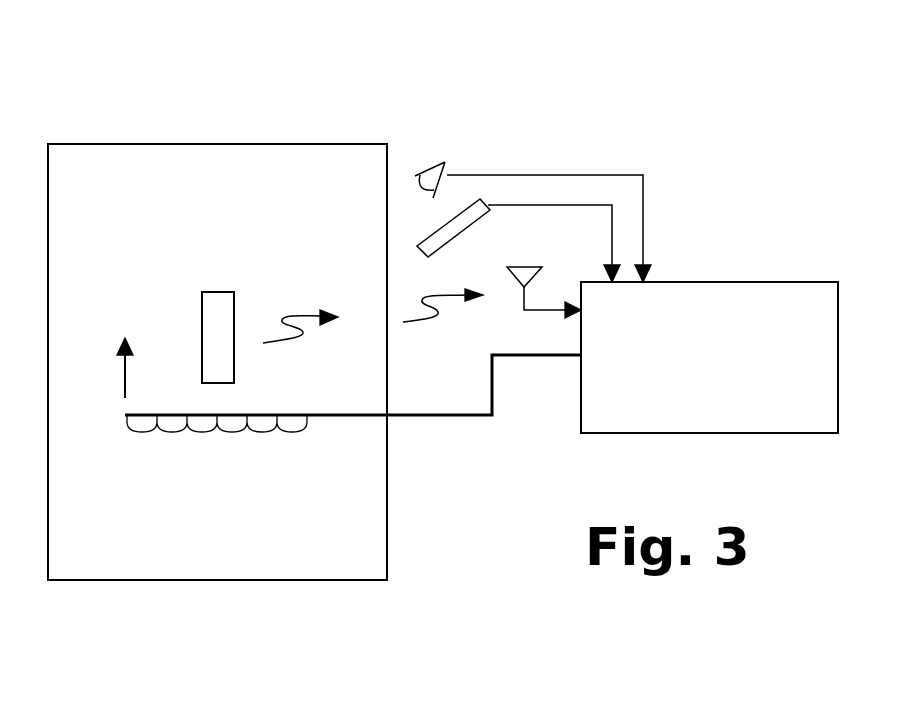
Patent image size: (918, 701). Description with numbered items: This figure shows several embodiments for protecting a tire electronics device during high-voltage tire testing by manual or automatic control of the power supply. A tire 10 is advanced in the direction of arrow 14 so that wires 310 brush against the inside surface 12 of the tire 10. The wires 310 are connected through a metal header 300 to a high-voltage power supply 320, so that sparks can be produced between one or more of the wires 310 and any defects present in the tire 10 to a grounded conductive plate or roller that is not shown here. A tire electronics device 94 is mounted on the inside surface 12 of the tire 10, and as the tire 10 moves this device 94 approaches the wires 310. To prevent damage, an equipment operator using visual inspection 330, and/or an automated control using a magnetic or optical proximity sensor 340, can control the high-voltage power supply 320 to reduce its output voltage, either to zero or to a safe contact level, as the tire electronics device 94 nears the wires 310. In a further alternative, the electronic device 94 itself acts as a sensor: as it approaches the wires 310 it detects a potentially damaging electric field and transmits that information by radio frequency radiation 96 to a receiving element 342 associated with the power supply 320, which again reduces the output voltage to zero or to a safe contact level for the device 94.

The tire 10 is at (267, 145).
The inside surface 12 is at (135, 170).
The arrow 14 is at (125, 373).
The tire electronics device 94 is at (202, 293).
The radio frequency radiation 96 is at (312, 318).
The metal header 300 is at (453, 418).
The wires 310 is at (177, 432).
The high-voltage power supply 320 is at (709, 357).
The visual inspection 330 is at (430, 167).
The magnetic or optical proximity sensor 340 is at (480, 197).
The receiving element 342 is at (543, 266).